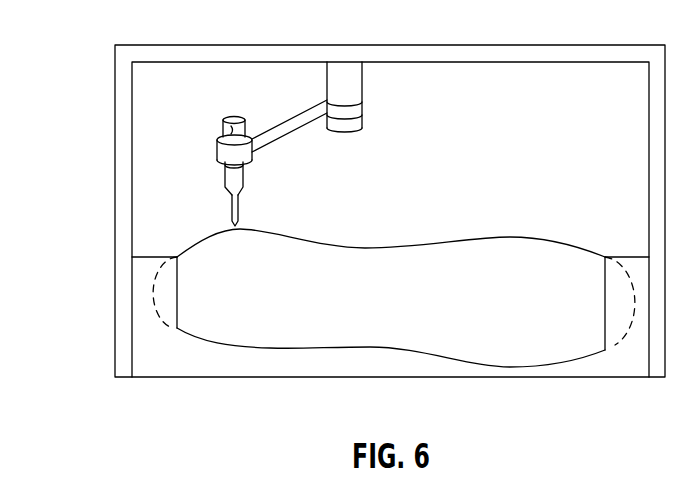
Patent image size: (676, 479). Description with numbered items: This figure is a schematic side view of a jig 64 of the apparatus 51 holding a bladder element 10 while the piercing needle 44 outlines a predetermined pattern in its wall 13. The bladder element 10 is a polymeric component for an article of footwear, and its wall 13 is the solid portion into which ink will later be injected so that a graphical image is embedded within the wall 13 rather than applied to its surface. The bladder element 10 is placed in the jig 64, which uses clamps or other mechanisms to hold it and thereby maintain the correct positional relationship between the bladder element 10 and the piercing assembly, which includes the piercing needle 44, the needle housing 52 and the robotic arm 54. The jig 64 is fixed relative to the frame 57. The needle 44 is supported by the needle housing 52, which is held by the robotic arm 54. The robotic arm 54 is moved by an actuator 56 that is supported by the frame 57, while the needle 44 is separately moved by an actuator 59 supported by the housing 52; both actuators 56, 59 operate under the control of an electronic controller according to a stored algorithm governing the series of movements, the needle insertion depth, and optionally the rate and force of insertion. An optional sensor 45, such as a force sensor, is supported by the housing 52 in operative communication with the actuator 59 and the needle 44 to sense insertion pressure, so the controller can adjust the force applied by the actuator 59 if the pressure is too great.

The bladder element 10 is at (523, 237).
The wall 13 is at (217, 232).
The piercing needle 44 is at (238, 224).
The sensor 45 is at (227, 112).
The apparatus 51 is at (90, 220).
The needle housing 52 is at (228, 177).
The robotic arm 54 is at (290, 129).
The actuator 56 is at (356, 124).
The frame 57 is at (615, 45).
The actuator 59 is at (224, 130).
The jig 64 is at (618, 377).